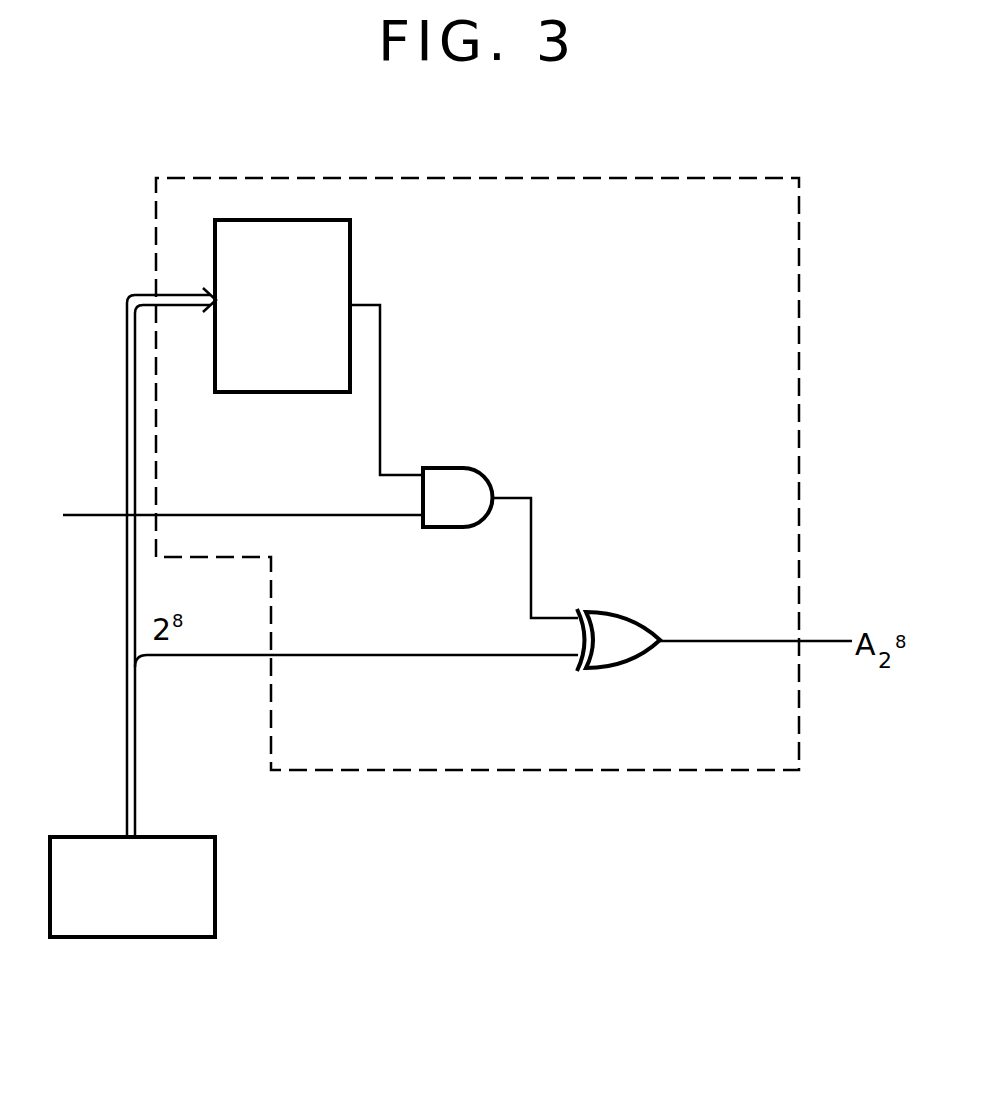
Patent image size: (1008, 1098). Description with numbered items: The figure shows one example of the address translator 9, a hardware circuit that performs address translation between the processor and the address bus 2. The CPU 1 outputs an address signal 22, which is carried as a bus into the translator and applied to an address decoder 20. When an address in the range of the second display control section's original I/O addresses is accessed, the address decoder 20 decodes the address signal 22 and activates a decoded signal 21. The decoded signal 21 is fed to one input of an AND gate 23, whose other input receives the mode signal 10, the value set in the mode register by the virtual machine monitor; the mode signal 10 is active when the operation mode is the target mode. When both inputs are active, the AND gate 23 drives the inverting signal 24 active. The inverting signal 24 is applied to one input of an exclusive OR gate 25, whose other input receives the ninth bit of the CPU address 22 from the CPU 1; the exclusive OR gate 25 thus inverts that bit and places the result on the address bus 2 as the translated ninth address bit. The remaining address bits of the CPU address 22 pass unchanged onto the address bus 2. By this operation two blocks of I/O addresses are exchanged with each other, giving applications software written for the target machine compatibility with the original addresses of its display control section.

The CPU 1 is at (214, 898).
The address bus 2 is at (731, 646).
The address translator 9 is at (785, 316).
The mode signal 10 is at (283, 515).
The address decoder 20 is at (352, 224).
The decoded signal 21 is at (381, 378).
The address signal 22 is at (127, 452).
The AND gate 23 is at (470, 487).
The inverting signal 24 is at (532, 548).
The exclusive OR gate 25 is at (616, 619).